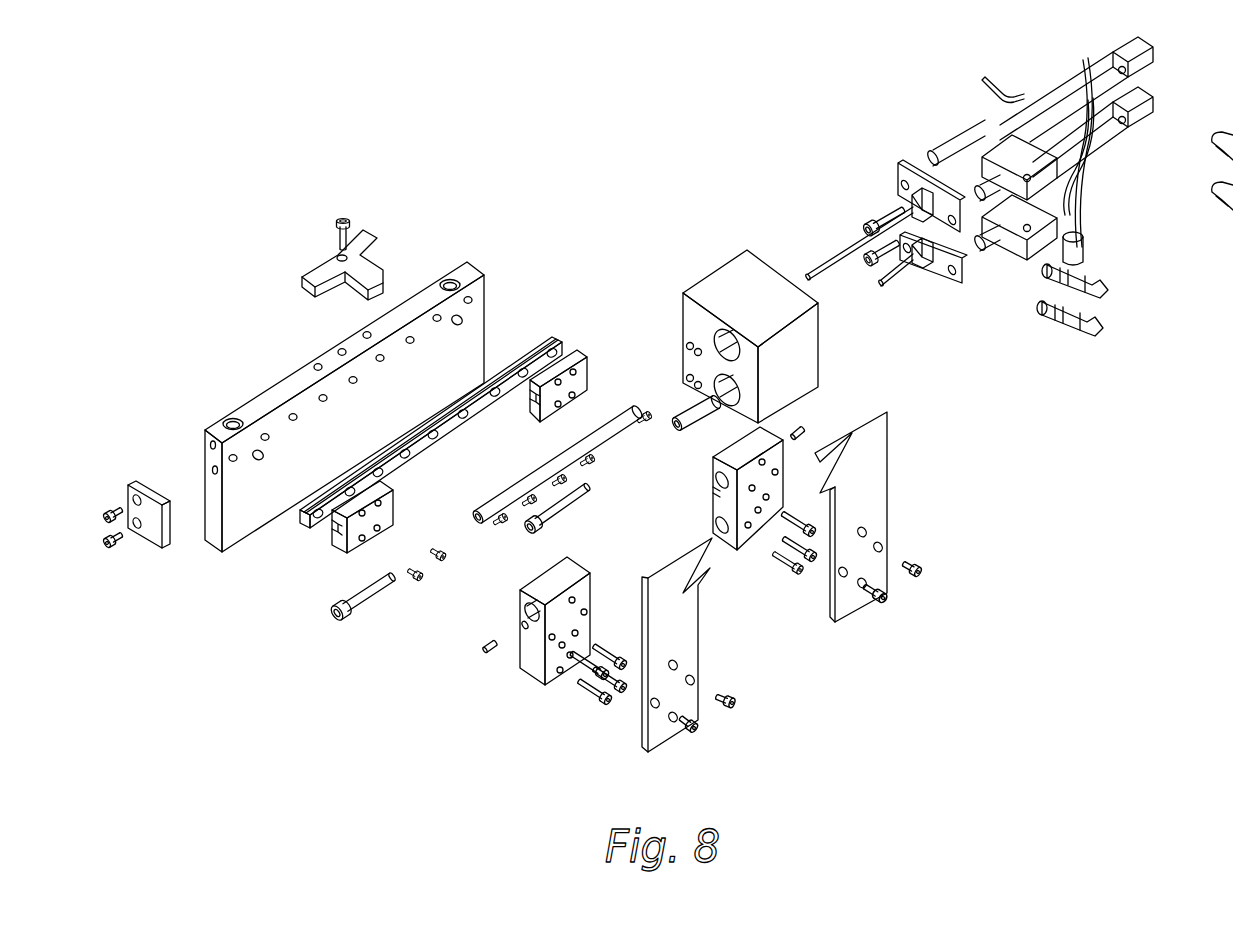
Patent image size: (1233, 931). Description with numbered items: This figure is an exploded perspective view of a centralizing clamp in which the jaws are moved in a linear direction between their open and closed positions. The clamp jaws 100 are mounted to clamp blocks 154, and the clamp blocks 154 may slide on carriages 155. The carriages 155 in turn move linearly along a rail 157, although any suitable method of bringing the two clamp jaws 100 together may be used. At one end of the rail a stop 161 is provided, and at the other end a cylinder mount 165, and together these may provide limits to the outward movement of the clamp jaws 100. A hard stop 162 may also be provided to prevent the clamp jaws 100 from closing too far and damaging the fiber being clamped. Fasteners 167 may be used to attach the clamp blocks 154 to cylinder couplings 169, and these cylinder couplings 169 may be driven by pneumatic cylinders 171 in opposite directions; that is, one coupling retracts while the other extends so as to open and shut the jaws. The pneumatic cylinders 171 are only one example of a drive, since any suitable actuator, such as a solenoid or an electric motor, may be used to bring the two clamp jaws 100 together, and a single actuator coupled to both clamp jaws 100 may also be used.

The clamp jaws 100 is at (693, 605).
The clamp blocks 154 is at (727, 448).
The carriages 155 is at (583, 353).
The rail 157 is at (533, 350).
The stop 161 is at (153, 543).
The hard stop 162 is at (367, 245).
The cylinder mount 165 is at (748, 262).
The fasteners 167 is at (568, 512).
The cylinder couplings 169 is at (513, 488).
The pneumatic cylinders 171 is at (1057, 98).